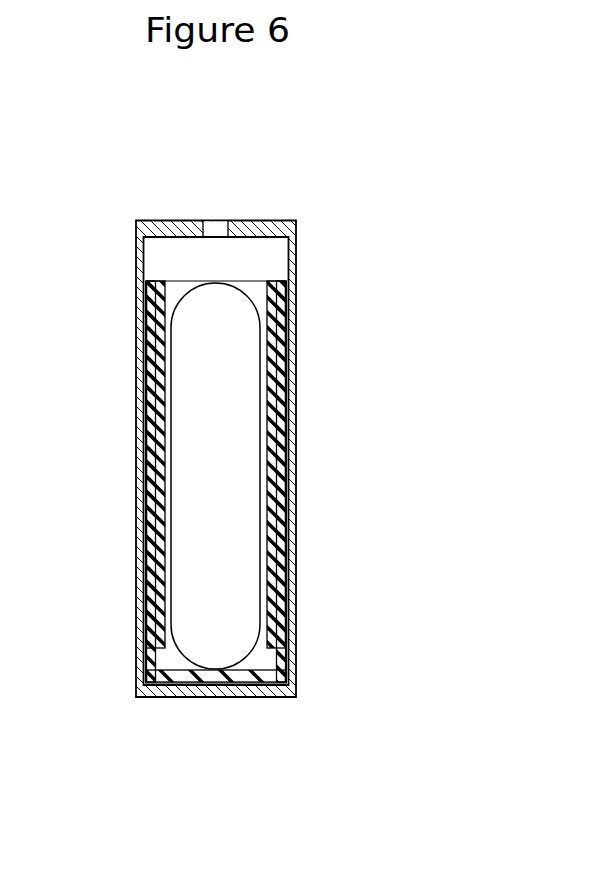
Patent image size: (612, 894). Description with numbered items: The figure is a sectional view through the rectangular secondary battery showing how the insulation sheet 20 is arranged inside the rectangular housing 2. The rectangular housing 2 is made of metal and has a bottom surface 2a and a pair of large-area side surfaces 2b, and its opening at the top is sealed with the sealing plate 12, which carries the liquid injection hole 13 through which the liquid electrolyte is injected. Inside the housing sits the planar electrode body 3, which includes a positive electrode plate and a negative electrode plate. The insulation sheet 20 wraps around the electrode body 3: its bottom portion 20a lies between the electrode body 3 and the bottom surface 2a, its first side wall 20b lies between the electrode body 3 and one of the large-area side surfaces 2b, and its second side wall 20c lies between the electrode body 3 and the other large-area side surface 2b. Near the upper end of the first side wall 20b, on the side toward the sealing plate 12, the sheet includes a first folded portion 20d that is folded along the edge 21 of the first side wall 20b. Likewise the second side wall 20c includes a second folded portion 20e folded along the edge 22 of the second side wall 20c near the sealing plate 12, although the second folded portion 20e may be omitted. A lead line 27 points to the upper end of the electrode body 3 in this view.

The rectangular housing 2 is at (219, 456).
The bottom surface 2a is at (251, 695).
The large-area side surface 2b is at (140, 382).
The electrode body 3 is at (269, 475).
The sealing plate 12 is at (263, 220).
The liquid injection hole 13 is at (223, 220).
The insulation sheet 20 is at (218, 503).
The bottom portion 20a is at (180, 677).
The first side wall 20b is at (152, 462).
The second side wall 20c is at (282, 425).
The first folded portion 20d is at (162, 545).
The second folded portion 20e is at (270, 580).
The edge of the first side wall 21 is at (161, 280).
The edge of the second side wall 22 is at (268, 280).
The top of cell 27 is at (217, 284).